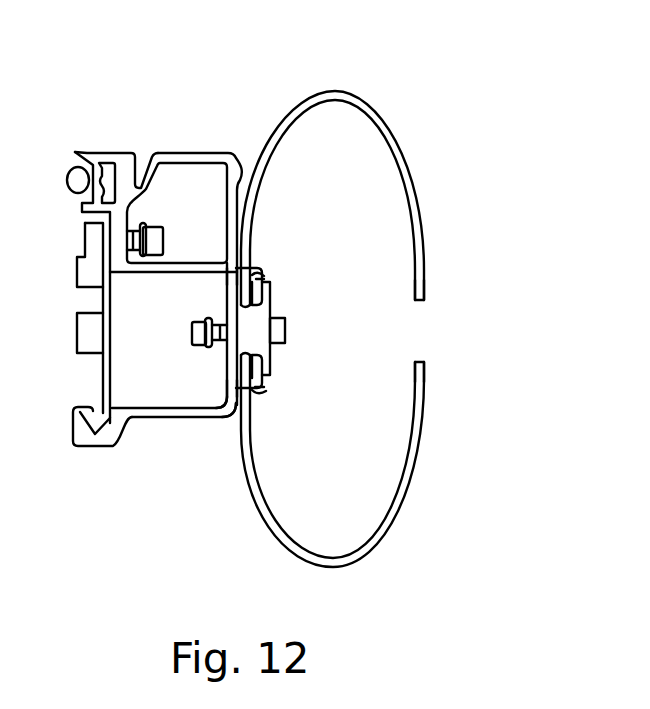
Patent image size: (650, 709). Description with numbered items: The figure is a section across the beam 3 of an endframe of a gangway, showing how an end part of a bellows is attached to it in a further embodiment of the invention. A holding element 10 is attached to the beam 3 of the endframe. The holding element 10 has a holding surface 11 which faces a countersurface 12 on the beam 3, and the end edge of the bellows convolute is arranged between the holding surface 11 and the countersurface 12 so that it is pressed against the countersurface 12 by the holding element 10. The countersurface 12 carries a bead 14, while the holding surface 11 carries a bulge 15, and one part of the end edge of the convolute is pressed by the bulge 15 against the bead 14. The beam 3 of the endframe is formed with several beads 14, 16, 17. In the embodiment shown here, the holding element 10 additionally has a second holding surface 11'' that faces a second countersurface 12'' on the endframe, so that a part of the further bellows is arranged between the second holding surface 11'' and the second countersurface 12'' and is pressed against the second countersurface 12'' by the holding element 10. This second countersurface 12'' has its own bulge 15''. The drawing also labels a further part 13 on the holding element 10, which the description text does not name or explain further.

The beam 3 is at (167, 158).
The bead 14 is at (228, 158).
The holding element 10 is at (260, 312).
The holding surface 11 is at (286, 229).
The bulge 15 is at (302, 242).
The second holding surface 11'' is at (312, 416).
The bulge 15'' is at (301, 431).
The boss 13 is at (278, 330).
The bead 16 is at (225, 283).
The countersurface 12 is at (183, 287).
The second countersurface 12'' is at (185, 369).
The bead 17 is at (237, 392).